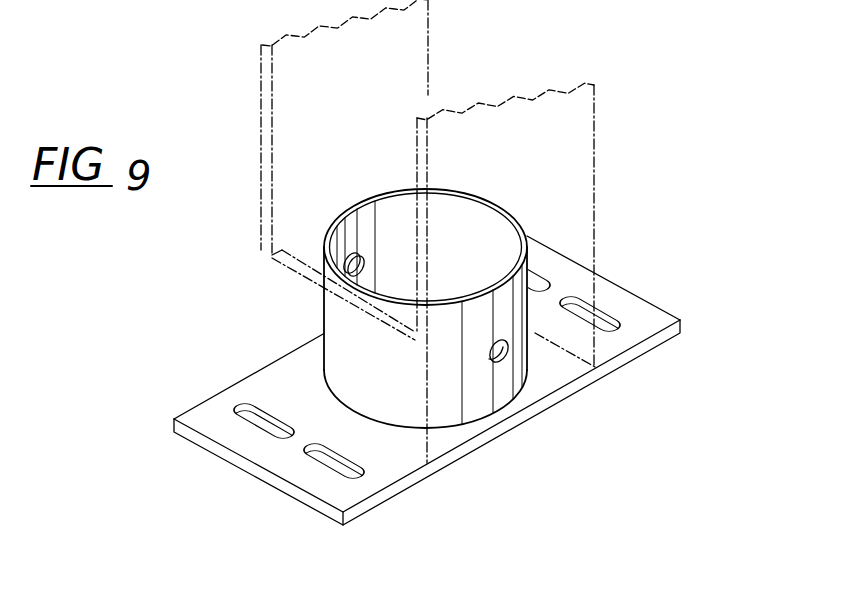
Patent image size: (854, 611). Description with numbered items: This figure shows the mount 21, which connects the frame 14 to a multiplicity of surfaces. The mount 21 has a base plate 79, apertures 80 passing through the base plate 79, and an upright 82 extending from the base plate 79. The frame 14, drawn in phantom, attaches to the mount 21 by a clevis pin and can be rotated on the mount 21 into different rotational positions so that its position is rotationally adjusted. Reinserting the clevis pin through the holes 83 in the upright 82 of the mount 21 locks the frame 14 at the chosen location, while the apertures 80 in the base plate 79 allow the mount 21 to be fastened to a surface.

The frame 14 is at (557, 140).
The mount 21 is at (637, 318).
The base plate 79 is at (555, 365).
The apertures 80 is at (240, 412).
The upright 82 is at (448, 388).
The holes 83 is at (503, 341).